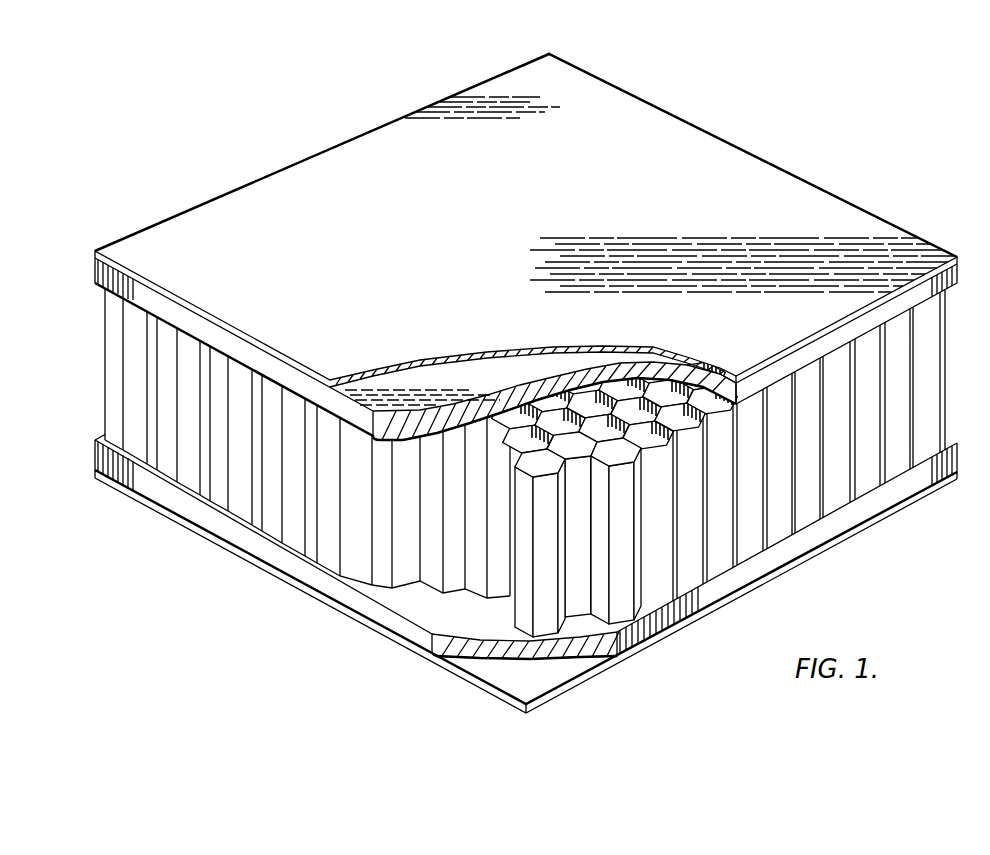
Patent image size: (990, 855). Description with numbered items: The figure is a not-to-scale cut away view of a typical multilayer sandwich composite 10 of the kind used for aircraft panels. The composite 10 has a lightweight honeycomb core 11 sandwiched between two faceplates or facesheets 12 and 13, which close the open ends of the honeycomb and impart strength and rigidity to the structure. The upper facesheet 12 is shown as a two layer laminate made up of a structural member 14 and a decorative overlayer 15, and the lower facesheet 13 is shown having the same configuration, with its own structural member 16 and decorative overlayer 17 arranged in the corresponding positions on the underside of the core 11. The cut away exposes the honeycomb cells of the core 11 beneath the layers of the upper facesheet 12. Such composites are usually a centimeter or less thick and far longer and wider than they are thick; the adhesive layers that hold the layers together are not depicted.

The composite 10 is at (306, 196).
The honeycomb core 11 is at (130, 352).
The facesheet 12 is at (93, 247).
The facesheet 13 is at (93, 433).
The structural member 14 is at (97, 251).
The decorative overlayer 15 is at (181, 298).
The bottom inner layer 16 is at (232, 528).
The bottom skin layer 17 is at (280, 572).